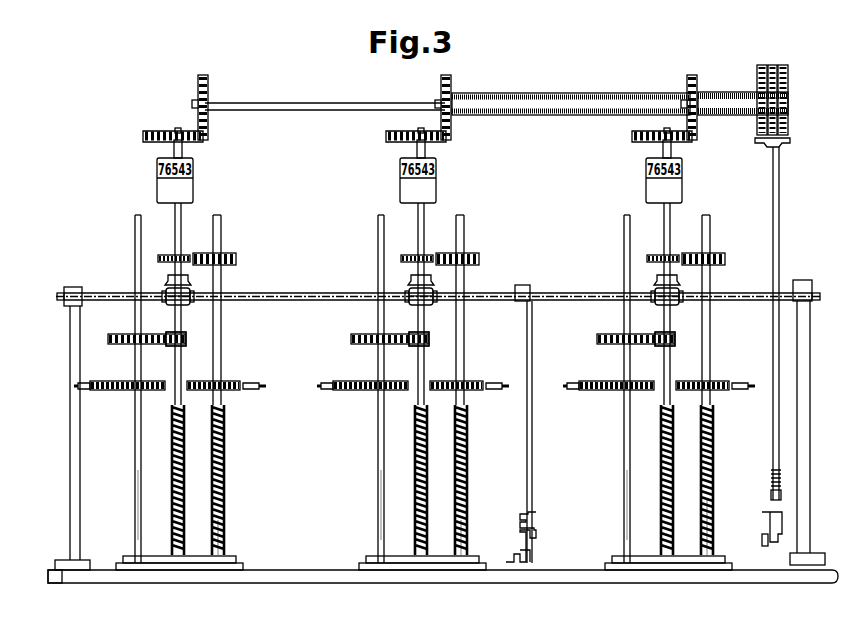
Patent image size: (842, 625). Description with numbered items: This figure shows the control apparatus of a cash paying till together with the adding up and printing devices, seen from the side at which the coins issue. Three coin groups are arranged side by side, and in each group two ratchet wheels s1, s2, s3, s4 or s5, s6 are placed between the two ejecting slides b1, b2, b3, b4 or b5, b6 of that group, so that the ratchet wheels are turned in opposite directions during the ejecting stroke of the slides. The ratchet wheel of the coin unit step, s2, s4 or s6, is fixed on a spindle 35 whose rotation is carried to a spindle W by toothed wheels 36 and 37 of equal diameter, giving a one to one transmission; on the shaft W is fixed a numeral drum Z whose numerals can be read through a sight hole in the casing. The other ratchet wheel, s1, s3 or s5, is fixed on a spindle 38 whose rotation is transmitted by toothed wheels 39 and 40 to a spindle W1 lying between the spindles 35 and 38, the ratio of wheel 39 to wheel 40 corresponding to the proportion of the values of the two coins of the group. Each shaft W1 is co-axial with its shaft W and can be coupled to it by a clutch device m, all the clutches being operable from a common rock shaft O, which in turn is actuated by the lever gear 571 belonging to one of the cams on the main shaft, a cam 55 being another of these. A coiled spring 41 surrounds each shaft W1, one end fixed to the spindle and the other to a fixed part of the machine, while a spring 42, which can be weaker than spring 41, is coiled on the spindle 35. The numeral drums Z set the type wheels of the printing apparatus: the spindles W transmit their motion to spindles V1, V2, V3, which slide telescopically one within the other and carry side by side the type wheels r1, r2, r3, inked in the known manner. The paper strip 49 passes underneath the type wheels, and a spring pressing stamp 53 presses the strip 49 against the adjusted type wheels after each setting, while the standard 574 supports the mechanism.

The numeral drum Z is at (427, 171).
The spindle W is at (439, 293).
The toothed wheel 37 is at (427, 246).
The toothed wheel 36 is at (464, 247).
The clutch device m is at (393, 281).
The rock shaft O is at (282, 290).
The toothed wheel 39 is at (389, 329).
The toothed wheel 40 is at (454, 335).
The ejecting slide b1 is at (63, 389).
The ejecting slide b2 is at (268, 395).
The ejecting slide b3 is at (316, 383).
The ejecting slide b4 is at (518, 386).
The ejecting slide b5 is at (579, 396).
The ejecting slide b6 is at (748, 396).
The ratchet wheel s1 is at (127, 400).
The ratchet wheel s2 is at (215, 400).
The ratchet wheel s3 is at (370, 400).
The ratchet wheel s4 is at (458, 400).
The ratchet wheel s5 is at (616, 400).
The ratchet wheel s6 is at (706, 397).
The coiled spring 41 is at (410, 480).
The coiled spring 42 is at (478, 480).
The spindle 38 is at (372, 505).
The spindle 35 is at (482, 525).
The spindle W1 is at (418, 547).
The spindle V1 is at (298, 102).
The spindle V2 is at (496, 120).
The spindle V3 is at (712, 90).
The type wheel r1 is at (788, 82).
The type wheel r2 is at (776, 66).
The type wheel r3 is at (758, 68).
The paper strip 49 is at (760, 146).
The spring pressing stamp 53 is at (778, 206).
The cam 55 is at (782, 526).
The lever gear 571 is at (532, 545).
The standard 574 is at (532, 462).